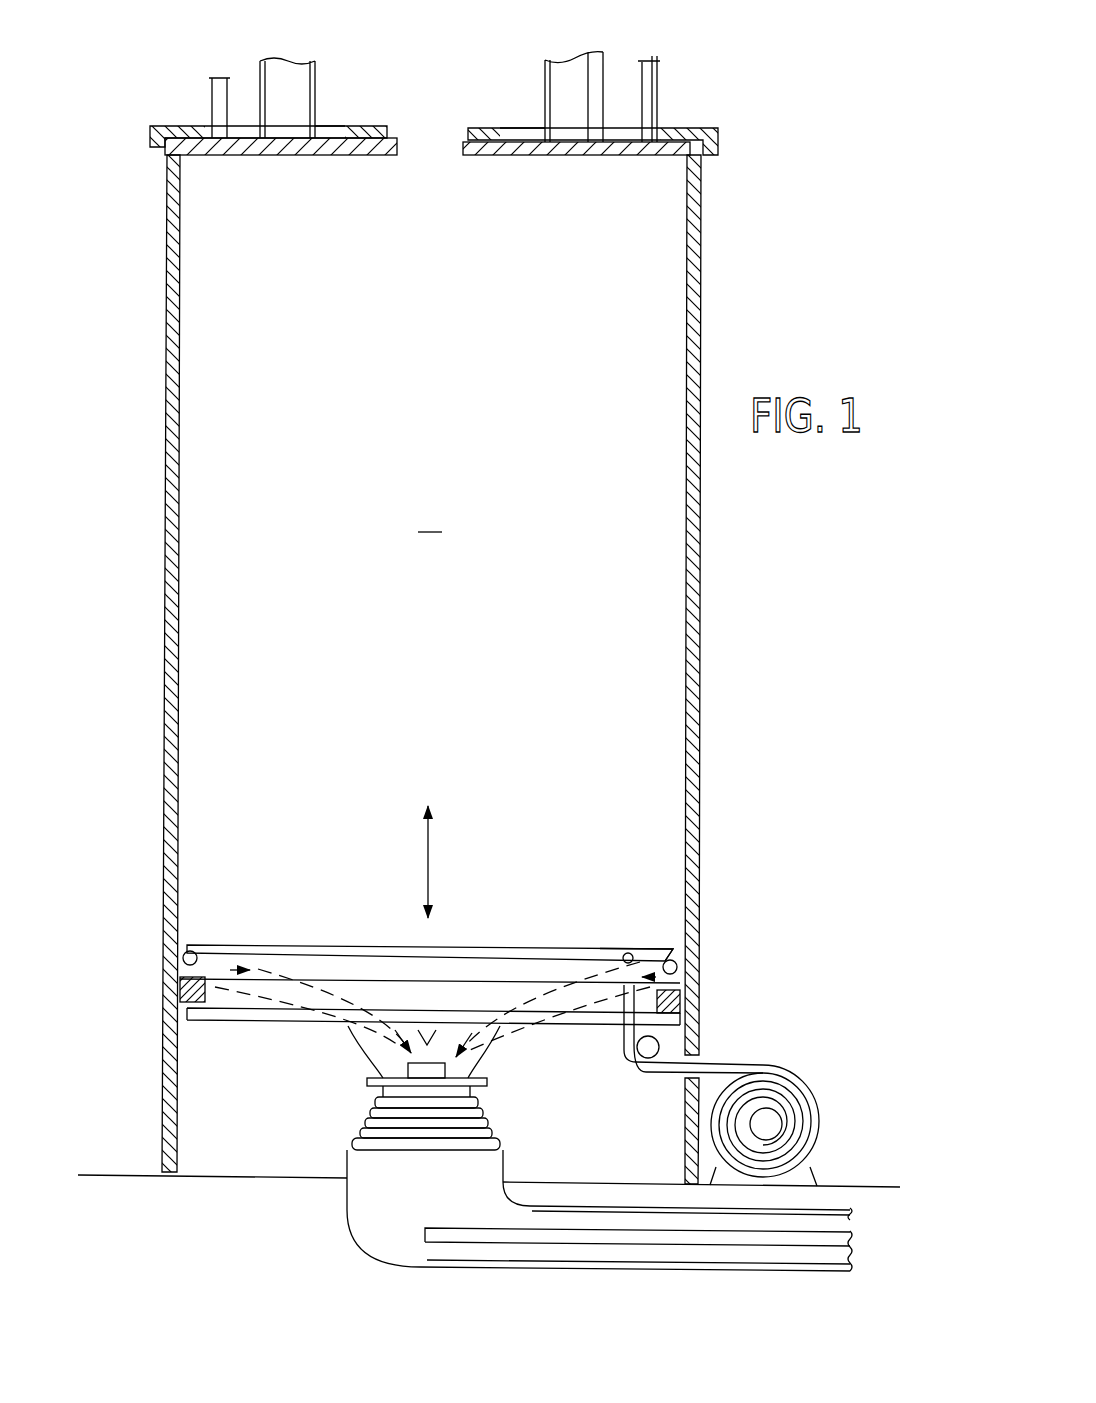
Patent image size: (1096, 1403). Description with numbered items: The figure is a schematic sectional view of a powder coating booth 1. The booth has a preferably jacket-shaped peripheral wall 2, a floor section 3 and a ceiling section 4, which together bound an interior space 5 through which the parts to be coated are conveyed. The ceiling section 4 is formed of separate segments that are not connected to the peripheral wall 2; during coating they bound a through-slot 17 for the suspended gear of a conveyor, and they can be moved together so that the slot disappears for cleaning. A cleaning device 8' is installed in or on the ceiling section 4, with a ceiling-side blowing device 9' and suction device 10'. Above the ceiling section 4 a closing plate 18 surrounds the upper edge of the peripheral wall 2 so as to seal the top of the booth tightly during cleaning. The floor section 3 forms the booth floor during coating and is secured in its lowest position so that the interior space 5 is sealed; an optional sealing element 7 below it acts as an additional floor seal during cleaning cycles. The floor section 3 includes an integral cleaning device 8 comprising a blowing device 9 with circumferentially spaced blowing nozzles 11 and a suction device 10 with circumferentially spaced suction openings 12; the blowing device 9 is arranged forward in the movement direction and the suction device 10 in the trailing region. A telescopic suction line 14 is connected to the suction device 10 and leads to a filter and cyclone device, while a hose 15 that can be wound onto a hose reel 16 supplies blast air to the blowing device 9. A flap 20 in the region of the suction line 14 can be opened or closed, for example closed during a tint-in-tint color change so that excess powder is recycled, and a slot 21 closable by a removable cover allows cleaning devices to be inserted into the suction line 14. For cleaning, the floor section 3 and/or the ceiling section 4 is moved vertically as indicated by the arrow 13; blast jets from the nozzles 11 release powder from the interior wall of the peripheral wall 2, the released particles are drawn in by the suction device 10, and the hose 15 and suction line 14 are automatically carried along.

The coating booth 1 is at (740, 290).
The peripheral wall 2 is at (702, 531).
The floor section 3 is at (678, 974).
The ceiling section 4 is at (240, 150).
The interior space 5 is at (430, 517).
The sealing element 7 is at (190, 1015).
The cleaning device 8 is at (680, 914).
The cleaning device 8' is at (430, 66).
The blowing device 9 is at (394, 926).
The blowing device 9' is at (438, 73).
The suction device 10 is at (372, 1023).
The suction device 10' is at (444, 73).
The blowing nozzles 11 is at (182, 948).
The suction openings 12 is at (182, 961).
The arrow 13 is at (455, 862).
The suction line 14 is at (400, 1142).
The hose 15 is at (715, 1062).
The hose reel 16 is at (765, 1120).
The through-slot 17 is at (428, 147).
The closing plate 18 is at (683, 128).
The flap 20 is at (383, 1083).
The slot 21 is at (525, 1238).